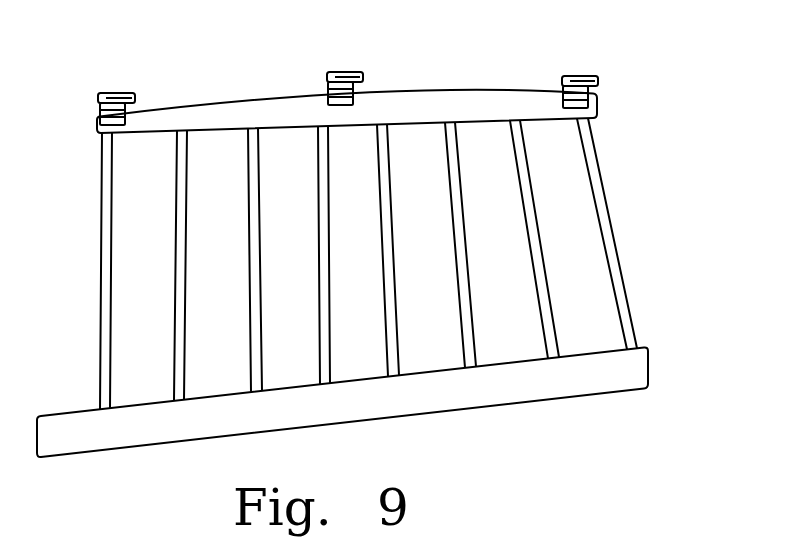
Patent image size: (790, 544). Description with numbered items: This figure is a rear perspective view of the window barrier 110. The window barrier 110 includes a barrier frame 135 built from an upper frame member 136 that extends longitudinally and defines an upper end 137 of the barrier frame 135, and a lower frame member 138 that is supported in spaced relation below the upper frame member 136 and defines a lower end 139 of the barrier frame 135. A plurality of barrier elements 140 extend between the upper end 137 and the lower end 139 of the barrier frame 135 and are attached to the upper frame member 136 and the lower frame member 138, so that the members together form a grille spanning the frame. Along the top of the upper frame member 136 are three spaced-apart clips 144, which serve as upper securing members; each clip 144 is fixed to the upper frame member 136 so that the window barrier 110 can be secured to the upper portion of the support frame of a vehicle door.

The window barrier 110 is at (645, 74).
The barrier frame 135 is at (665, 363).
The upper frame member 136 is at (447, 100).
The upper end 137 is at (389, 72).
The lower frame member 138 is at (523, 391).
The lower end 139 is at (183, 468).
The barrier elements 140 is at (529, 238).
The clips 144 is at (115, 92).